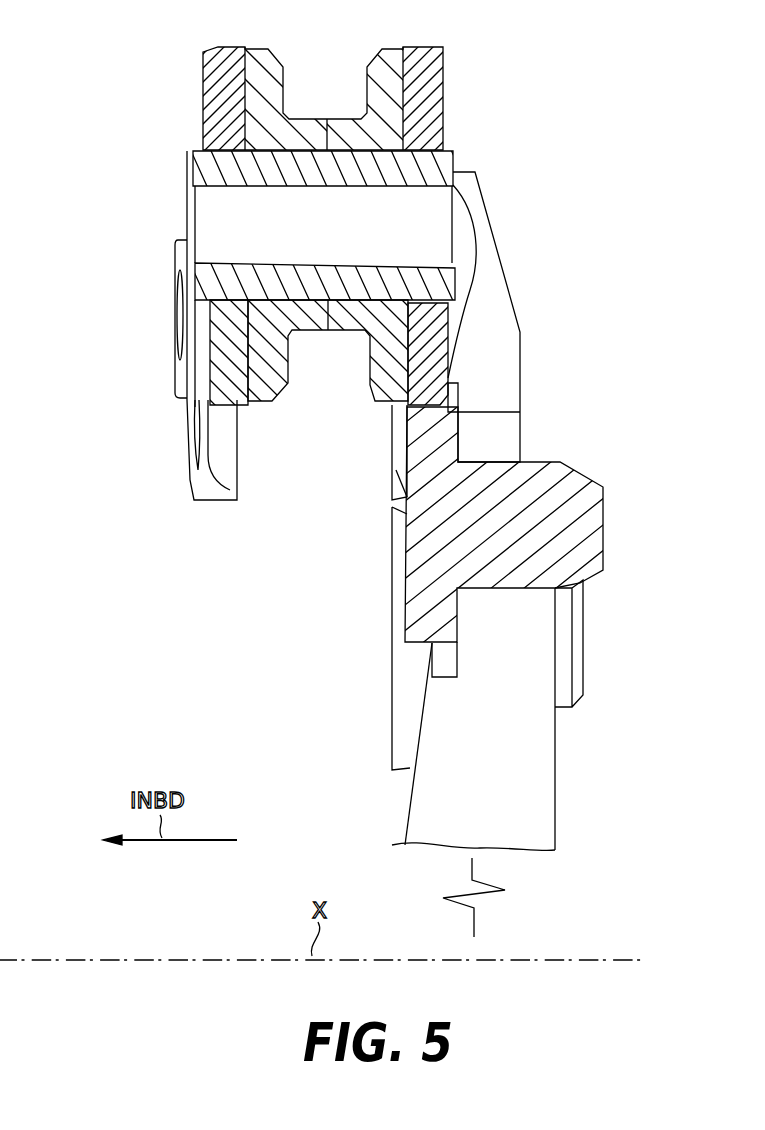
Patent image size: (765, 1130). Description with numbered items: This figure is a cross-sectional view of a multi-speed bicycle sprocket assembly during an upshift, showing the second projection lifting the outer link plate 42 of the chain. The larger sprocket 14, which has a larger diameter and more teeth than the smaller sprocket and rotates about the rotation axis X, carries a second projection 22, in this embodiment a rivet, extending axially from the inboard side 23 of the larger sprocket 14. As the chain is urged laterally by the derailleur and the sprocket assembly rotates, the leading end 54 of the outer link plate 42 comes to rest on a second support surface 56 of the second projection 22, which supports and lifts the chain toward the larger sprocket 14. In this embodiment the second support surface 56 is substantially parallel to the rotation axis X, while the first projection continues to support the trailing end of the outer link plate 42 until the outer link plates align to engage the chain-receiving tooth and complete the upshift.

The outer link plate 42 is at (427, 93).
The leading end 54 is at (440, 322).
The second support surface 56 is at (455, 396).
The second projection 22 is at (567, 478).
The inboard side 23 is at (455, 660).
The larger sprocket 14 is at (537, 787).